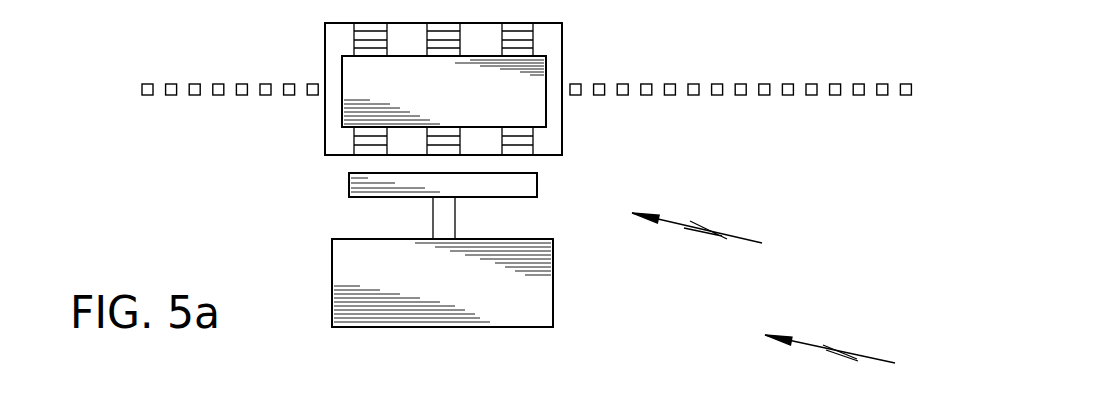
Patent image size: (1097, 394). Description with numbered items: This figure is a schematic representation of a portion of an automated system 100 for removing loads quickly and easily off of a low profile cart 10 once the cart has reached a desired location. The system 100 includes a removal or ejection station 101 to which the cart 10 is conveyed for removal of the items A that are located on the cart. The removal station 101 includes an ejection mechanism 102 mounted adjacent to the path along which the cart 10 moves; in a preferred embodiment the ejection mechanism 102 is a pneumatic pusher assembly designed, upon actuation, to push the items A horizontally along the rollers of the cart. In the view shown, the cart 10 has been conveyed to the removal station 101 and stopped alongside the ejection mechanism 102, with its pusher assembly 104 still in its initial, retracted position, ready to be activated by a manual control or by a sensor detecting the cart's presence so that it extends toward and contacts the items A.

The cart 10 is at (552, 42).
The items A is at (538, 99).
The pusher assembly 104 is at (355, 185).
The ejection mechanism 102 is at (518, 301).
The removal or ejection station 101 is at (715, 232).
The automated system 100 is at (850, 354).